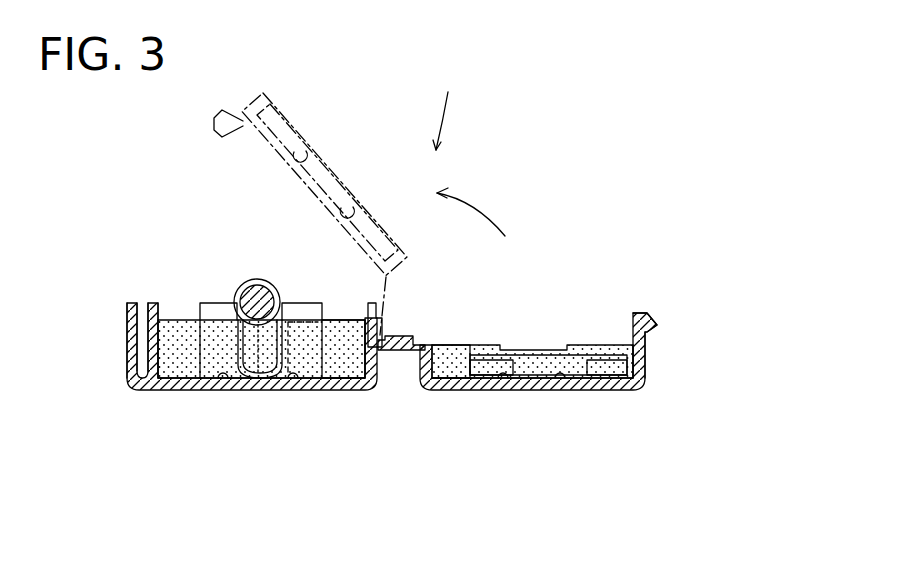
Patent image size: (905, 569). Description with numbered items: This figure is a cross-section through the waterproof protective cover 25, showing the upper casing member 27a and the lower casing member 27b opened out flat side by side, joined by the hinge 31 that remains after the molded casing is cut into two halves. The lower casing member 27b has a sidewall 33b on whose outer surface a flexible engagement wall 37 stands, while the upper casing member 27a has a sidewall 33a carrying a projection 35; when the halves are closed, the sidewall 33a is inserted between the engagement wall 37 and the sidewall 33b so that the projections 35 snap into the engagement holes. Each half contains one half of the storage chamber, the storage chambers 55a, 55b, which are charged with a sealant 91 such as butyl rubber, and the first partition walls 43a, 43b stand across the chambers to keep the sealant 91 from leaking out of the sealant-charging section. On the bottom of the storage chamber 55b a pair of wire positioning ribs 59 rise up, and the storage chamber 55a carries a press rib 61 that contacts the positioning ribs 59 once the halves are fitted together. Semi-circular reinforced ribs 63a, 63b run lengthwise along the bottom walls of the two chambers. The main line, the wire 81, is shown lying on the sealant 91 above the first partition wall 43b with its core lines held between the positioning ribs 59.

The waterproof protective cover 25 is at (359, 198).
The upper casing member 27a is at (600, 392).
The lower casing member 27b is at (180, 393).
The hinge 31 is at (405, 336).
The sidewall of upper casing member 33a is at (638, 362).
The sidewall of lower casing member 33b is at (152, 305).
The projection 35 is at (650, 330).
The flexible engagement wall 37 is at (127, 330).
The first partition wall 43a is at (625, 375).
The first partition wall 43b is at (173, 357).
The storage chamber 55a is at (453, 363).
The storage chamber 55b is at (340, 353).
The wire positioning rib 59 is at (256, 300).
The press rib 61 is at (477, 365).
The reinforced rib 63a is at (563, 370).
The reinforced rib 63b is at (208, 355).
The wire 81 is at (260, 373).
The sealant 91 is at (210, 373).